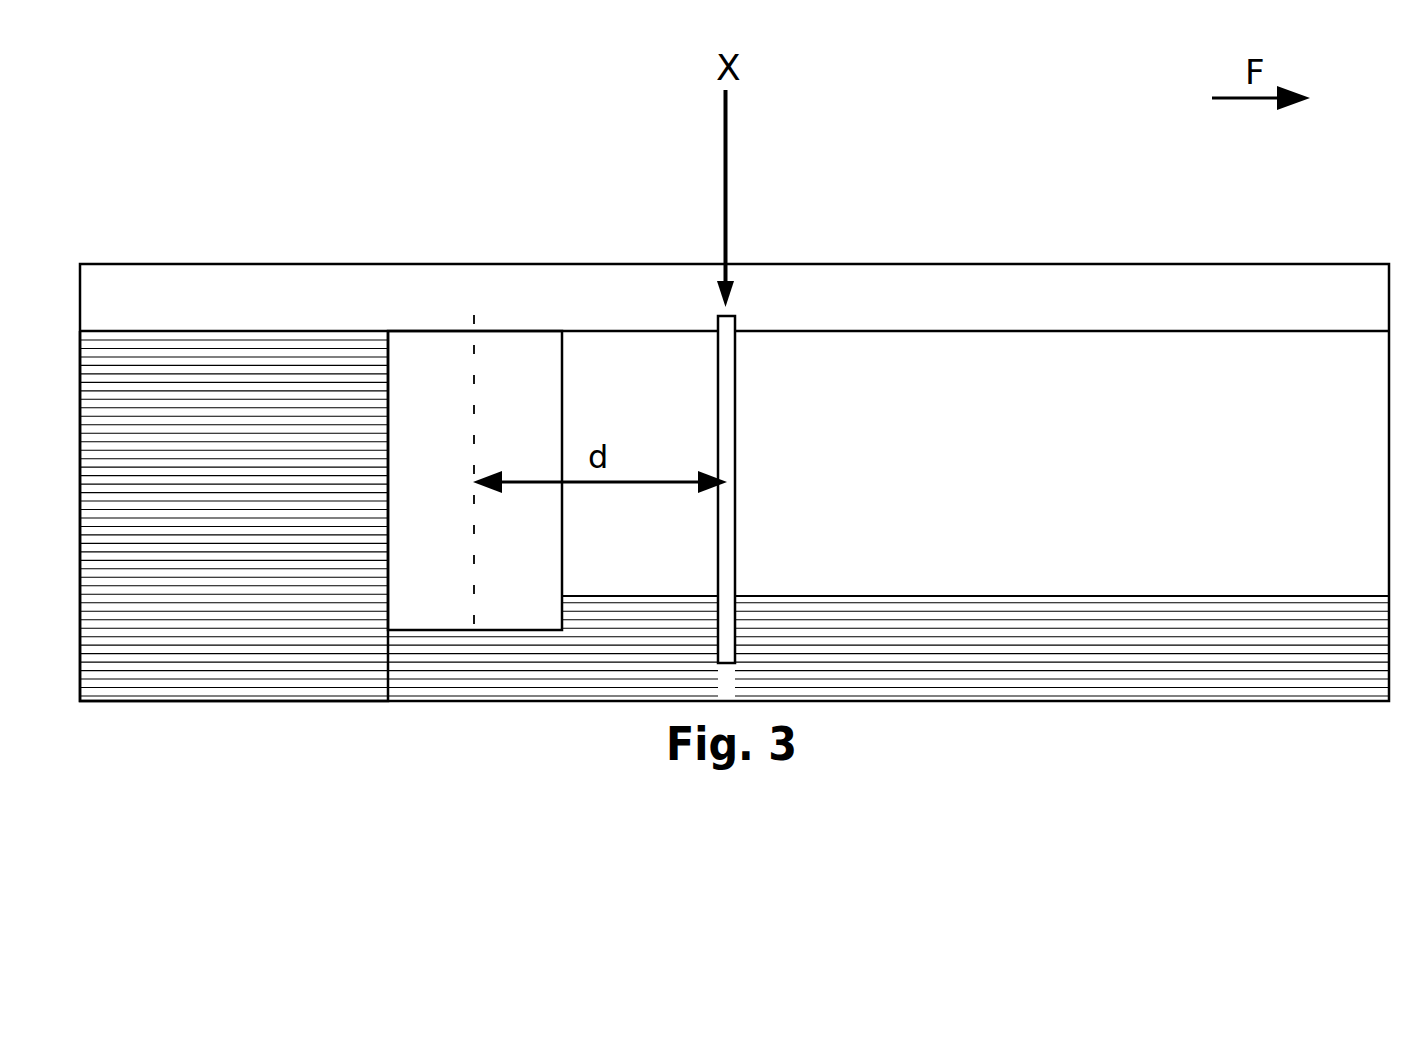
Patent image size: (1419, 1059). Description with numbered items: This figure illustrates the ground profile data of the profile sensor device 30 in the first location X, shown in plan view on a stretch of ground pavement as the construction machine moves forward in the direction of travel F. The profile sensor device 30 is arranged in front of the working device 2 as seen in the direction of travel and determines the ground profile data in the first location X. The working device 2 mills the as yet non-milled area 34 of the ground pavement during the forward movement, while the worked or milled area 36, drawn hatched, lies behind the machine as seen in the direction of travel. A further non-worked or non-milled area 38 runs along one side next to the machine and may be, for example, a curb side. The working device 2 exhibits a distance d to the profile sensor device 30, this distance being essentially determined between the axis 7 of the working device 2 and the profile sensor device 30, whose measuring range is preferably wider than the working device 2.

The working device 2 is at (522, 393).
The axis of the working device 7 is at (475, 380).
The profile sensor device 30 is at (727, 332).
The non-worked area 34 is at (1144, 368).
The worked area 36 is at (288, 388).
The non-worked area next to the machine 38 is at (1028, 298).